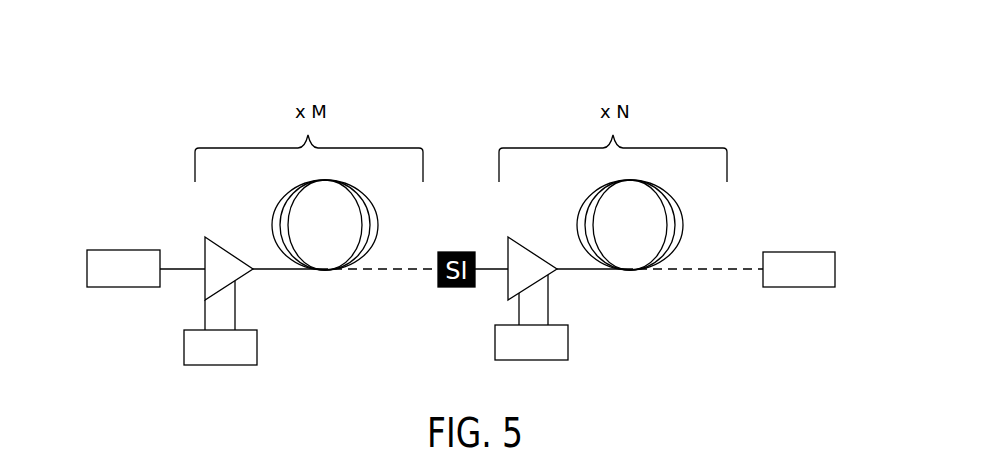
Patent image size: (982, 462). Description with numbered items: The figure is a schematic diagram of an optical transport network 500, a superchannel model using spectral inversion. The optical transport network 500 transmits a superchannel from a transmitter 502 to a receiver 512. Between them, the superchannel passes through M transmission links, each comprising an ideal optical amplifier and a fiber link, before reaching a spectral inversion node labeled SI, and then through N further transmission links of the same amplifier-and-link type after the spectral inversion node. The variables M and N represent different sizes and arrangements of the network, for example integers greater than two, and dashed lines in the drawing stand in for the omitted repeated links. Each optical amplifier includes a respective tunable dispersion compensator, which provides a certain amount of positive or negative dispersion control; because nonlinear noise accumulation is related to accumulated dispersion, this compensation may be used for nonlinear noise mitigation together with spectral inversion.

The optical transport network 500 is at (113, 46).
The transmitter 502 is at (117, 250).
The receiver 512 is at (797, 252).